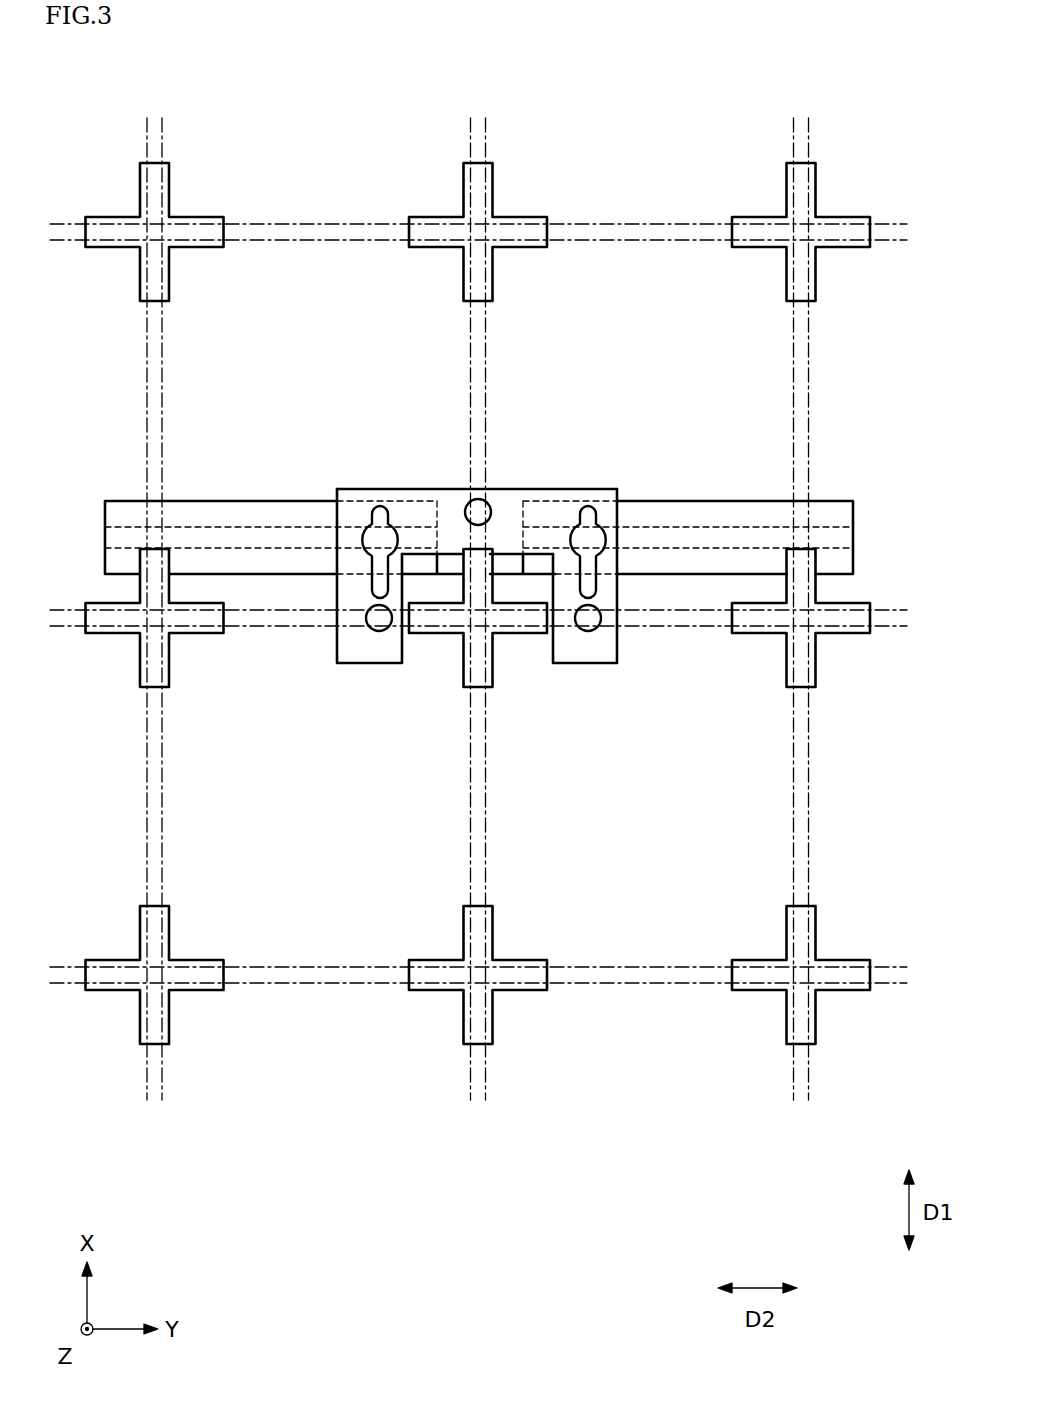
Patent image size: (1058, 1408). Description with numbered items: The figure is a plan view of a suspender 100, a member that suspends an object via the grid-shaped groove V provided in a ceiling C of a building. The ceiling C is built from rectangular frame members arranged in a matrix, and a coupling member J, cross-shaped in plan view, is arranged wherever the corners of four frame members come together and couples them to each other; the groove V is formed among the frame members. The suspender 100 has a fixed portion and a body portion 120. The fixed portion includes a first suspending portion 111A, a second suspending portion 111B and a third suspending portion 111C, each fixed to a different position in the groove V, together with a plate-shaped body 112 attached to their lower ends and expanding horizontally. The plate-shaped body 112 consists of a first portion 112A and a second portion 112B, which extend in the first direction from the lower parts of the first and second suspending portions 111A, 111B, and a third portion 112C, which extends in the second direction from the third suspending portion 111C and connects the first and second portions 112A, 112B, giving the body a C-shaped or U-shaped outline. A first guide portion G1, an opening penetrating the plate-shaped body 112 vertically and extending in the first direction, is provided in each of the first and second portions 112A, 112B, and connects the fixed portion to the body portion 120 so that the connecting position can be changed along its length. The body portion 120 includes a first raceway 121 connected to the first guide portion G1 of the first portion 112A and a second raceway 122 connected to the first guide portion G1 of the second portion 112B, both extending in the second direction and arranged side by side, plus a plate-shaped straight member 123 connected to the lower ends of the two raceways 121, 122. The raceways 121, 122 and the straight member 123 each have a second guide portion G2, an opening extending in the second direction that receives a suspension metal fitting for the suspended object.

The suspender 100 is at (340, 786).
The groove V is at (153, 132).
The coupling member J is at (197, 248).
The ceiling C is at (311, 78).
The body portion 120 is at (744, 478).
The first raceway 121 is at (222, 512).
The second raceway 122 is at (705, 512).
The straight member 123 is at (507, 508).
The plate-shaped body 112 is at (552, 680).
The first portion 112A is at (345, 590).
The second portion 112B is at (610, 588).
The third portion 112C is at (547, 497).
The first suspending portion 111A is at (379, 626).
The second suspending portion 111B is at (588, 625).
The third suspending portion 111C is at (473, 503).
The first guide portion G1 is at (368, 512).
The second guide portion G2 is at (123, 533).